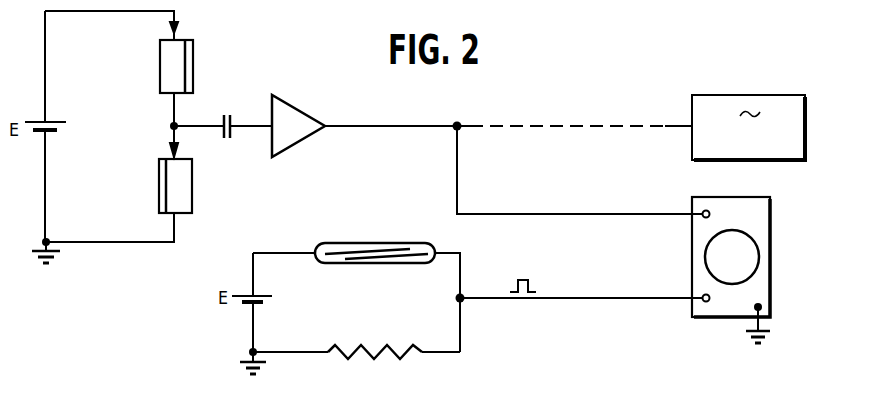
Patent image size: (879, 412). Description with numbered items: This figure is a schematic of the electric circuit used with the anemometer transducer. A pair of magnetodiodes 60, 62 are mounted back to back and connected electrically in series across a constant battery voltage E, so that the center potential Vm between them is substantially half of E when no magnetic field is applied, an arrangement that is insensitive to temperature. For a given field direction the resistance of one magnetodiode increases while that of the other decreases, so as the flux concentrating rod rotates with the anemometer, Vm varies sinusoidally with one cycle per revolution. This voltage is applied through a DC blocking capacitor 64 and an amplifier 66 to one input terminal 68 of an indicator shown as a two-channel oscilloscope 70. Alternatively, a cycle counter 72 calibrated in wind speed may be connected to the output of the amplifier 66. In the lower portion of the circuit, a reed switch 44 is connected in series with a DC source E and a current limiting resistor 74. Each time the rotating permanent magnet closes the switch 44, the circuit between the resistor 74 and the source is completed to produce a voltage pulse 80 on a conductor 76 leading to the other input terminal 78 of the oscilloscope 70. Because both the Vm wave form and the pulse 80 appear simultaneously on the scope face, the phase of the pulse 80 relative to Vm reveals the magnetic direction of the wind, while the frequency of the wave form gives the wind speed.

The reed switch 44 is at (343, 243).
The magnetodiode 60 is at (160, 69).
The magnetodiode 62 is at (159, 189).
The DC blocking capacitor 64 is at (227, 114).
The amplifier 66 is at (298, 136).
The oscilloscope signal input terminal 68 is at (708, 210).
The two-channel oscilloscope 70 is at (752, 208).
The cycle counter 72 is at (753, 95).
The current limiting resistor 74 is at (372, 350).
The conductor 76 is at (597, 296).
The input terminal 78 is at (709, 303).
The voltage pulse 80 is at (528, 283).